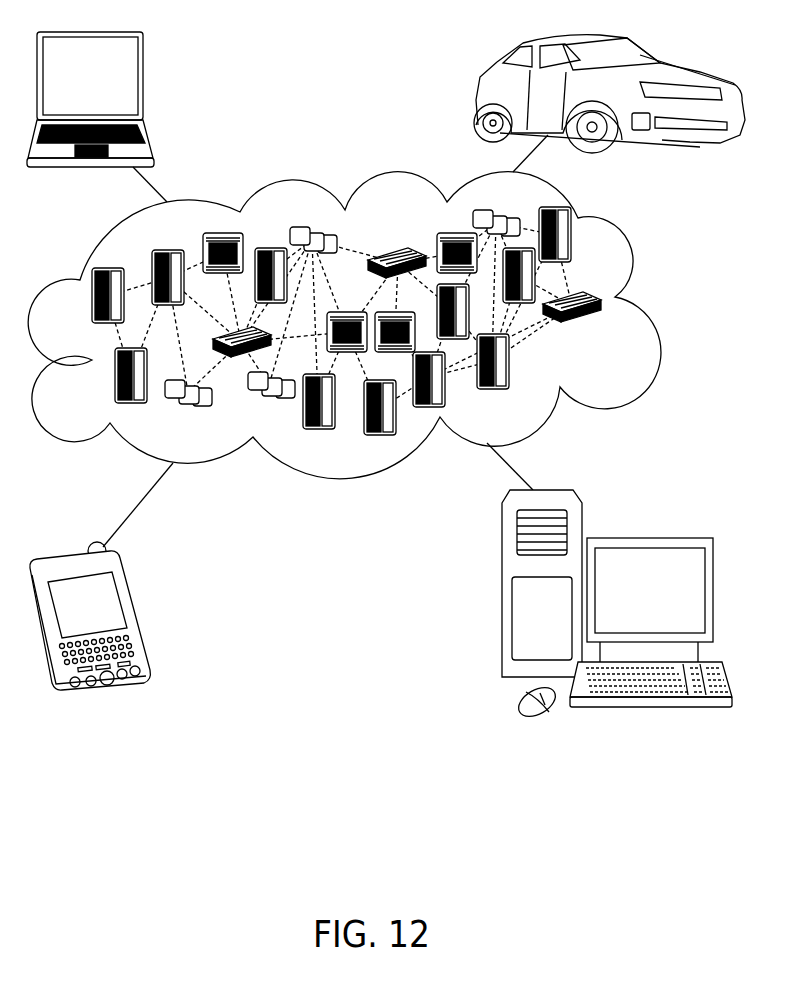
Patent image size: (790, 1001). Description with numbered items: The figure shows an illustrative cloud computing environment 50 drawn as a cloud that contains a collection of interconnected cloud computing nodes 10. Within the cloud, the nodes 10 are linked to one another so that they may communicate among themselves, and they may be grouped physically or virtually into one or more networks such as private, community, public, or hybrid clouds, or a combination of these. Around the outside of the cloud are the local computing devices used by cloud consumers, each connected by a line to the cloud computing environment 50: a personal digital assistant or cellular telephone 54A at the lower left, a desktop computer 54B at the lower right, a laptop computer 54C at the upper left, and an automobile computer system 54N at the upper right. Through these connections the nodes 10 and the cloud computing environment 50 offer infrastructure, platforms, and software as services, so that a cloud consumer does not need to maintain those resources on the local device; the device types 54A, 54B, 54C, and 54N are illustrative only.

The cloud computing node 10 is at (642, 347).
The cloud computing environment 50 is at (647, 307).
The personal digital assistant or cellular telephone 54A is at (135, 613).
The desktop computer 54B is at (647, 537).
The laptop computer 54C is at (143, 83).
The automobile computer system 54N is at (481, 98).